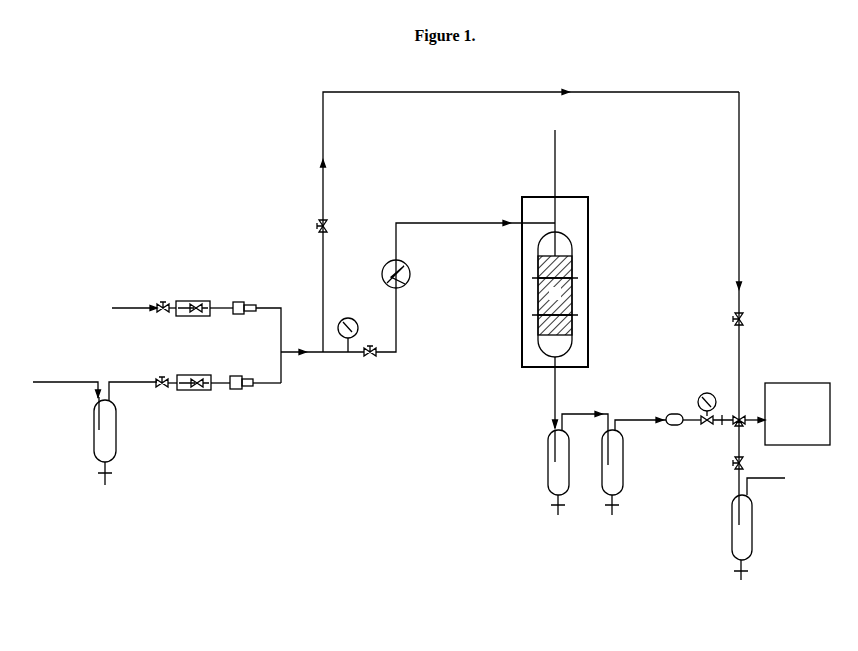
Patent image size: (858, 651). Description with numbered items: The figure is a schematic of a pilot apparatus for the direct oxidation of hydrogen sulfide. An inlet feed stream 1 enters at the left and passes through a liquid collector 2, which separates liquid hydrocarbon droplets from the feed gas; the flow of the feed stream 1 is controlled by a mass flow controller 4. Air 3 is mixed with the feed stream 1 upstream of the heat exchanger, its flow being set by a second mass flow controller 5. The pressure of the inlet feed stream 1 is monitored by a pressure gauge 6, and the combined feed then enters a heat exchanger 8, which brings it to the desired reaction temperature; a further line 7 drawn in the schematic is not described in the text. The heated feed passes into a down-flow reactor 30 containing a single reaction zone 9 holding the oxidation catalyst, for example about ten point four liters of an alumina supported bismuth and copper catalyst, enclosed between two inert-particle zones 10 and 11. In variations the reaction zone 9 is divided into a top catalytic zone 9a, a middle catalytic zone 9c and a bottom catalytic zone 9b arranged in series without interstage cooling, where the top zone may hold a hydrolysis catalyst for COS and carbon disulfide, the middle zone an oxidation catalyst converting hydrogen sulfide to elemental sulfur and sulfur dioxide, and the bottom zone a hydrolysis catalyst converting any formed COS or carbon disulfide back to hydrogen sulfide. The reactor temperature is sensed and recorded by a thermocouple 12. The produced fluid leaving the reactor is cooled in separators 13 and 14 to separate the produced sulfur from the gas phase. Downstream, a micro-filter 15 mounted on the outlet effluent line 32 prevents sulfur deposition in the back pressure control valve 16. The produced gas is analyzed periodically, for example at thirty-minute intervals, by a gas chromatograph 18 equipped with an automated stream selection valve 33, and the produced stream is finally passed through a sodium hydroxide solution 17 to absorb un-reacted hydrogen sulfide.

The inlet feed stream 1 is at (57, 382).
The liquid collector 2 is at (125, 448).
The air 3 is at (131, 309).
The mass flow controller 4 is at (218, 373).
The mass flow controller 5 is at (225, 342).
The pressure gauge 6 is at (348, 320).
The bypass line 7 is at (528, 221).
The heat exchanger 8 is at (405, 274).
The reaction zone 9 is at (555, 294).
The top catalytic zone 9a is at (528, 262).
The bottom catalytic zone 9b is at (576, 326).
The middle catalytic zone 9c is at (528, 289).
The inert-particle zone 10 is at (558, 347).
The inert-particle zone 11 is at (563, 249).
The thermocouple 12 is at (541, 193).
The separator 13 is at (562, 464).
The separator 14 is at (634, 467).
The micro-filter 15 is at (683, 407).
The back pressure control valve 16 is at (715, 398).
The sodium hydroxide solution 17 is at (758, 503).
The gas chromatograph 18 is at (797, 414).
The down-flow reactor 30 is at (576, 275).
The outlet effluent line 32 is at (639, 405).
The automated stream selection valve 33 is at (743, 411).